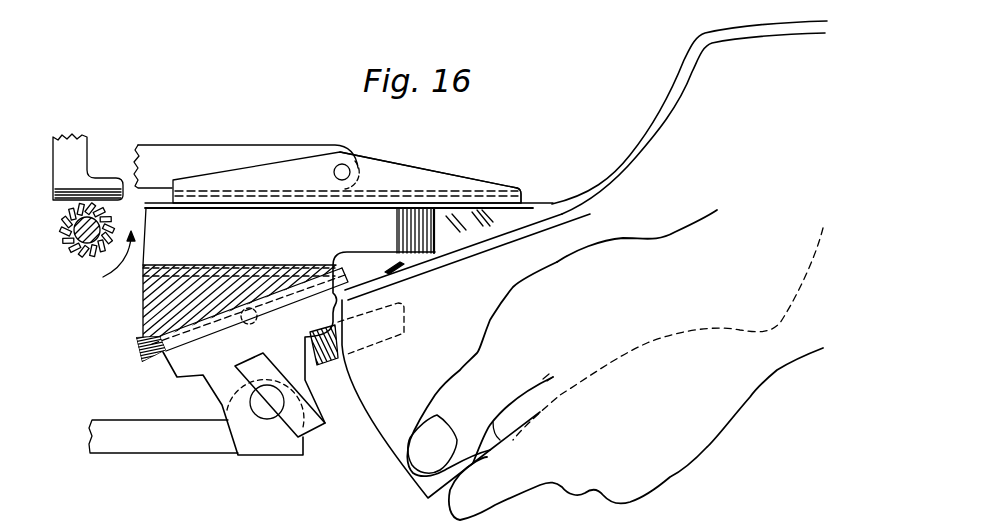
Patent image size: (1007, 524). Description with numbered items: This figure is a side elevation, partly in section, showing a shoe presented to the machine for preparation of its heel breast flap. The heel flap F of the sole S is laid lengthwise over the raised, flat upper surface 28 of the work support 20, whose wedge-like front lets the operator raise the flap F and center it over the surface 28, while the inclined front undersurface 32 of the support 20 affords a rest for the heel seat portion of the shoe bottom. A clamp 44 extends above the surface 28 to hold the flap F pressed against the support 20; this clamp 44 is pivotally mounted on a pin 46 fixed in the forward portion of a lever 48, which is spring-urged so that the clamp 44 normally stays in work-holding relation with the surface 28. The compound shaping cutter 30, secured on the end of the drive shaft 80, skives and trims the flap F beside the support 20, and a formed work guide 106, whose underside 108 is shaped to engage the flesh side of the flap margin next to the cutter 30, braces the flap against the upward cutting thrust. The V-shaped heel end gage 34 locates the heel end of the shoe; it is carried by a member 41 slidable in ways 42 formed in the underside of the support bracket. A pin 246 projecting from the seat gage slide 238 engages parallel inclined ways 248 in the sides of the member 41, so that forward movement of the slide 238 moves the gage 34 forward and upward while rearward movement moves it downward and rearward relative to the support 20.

The work support 20 is at (278, 243).
The upper surface 28 is at (279, 207).
The compound shaping cutter 30 is at (63, 257).
The front undersurface 32 is at (470, 243).
The heel end gage 34 is at (327, 365).
The member 41 is at (372, 268).
The ways 42 is at (249, 316).
The clamp 44 is at (422, 176).
The pin 46 is at (349, 167).
The lever 48 is at (232, 146).
The drive shaft 80 is at (86, 252).
The work guide 106 is at (100, 187).
The underside 108 is at (63, 199).
The seat gage slide 238 is at (115, 419).
The pin 246 is at (305, 434).
The inclined ways 248 is at (272, 440).
The heel flap F is at (480, 205).
The sole S is at (645, 132).